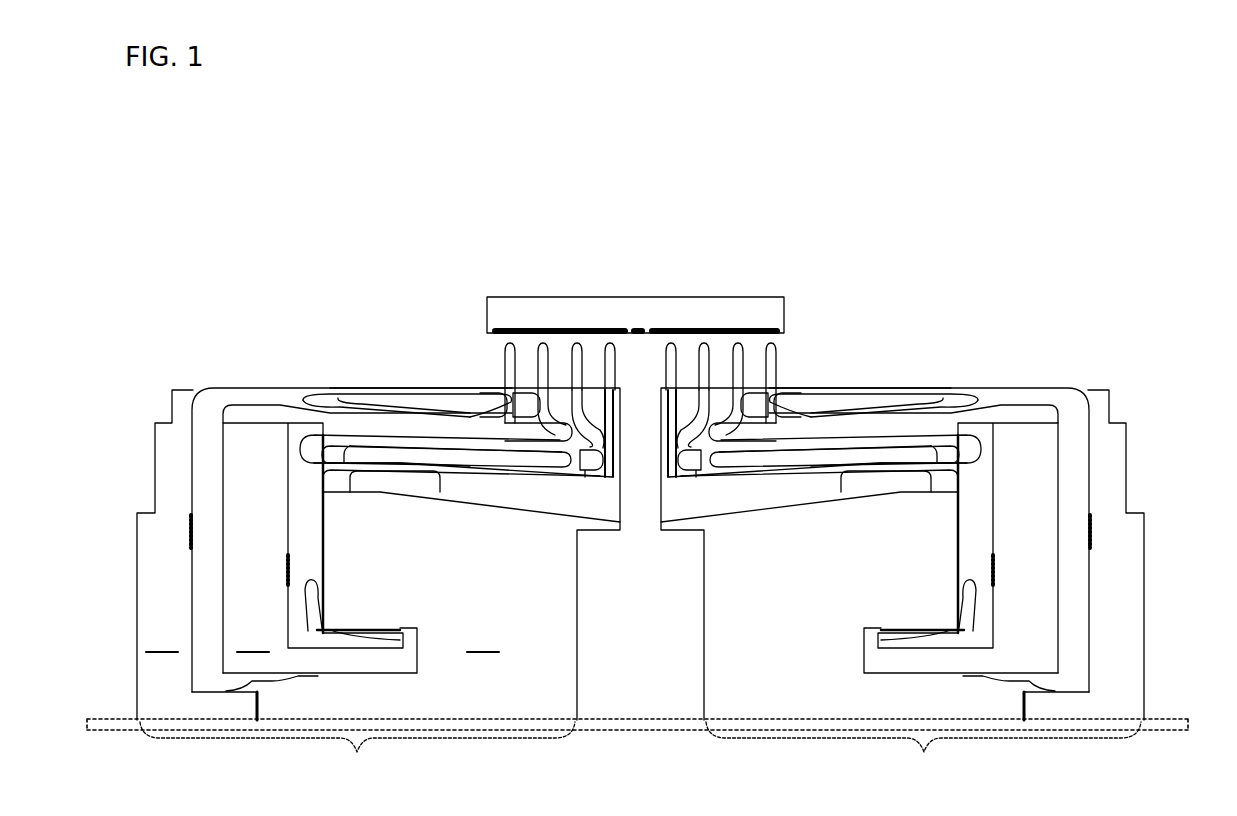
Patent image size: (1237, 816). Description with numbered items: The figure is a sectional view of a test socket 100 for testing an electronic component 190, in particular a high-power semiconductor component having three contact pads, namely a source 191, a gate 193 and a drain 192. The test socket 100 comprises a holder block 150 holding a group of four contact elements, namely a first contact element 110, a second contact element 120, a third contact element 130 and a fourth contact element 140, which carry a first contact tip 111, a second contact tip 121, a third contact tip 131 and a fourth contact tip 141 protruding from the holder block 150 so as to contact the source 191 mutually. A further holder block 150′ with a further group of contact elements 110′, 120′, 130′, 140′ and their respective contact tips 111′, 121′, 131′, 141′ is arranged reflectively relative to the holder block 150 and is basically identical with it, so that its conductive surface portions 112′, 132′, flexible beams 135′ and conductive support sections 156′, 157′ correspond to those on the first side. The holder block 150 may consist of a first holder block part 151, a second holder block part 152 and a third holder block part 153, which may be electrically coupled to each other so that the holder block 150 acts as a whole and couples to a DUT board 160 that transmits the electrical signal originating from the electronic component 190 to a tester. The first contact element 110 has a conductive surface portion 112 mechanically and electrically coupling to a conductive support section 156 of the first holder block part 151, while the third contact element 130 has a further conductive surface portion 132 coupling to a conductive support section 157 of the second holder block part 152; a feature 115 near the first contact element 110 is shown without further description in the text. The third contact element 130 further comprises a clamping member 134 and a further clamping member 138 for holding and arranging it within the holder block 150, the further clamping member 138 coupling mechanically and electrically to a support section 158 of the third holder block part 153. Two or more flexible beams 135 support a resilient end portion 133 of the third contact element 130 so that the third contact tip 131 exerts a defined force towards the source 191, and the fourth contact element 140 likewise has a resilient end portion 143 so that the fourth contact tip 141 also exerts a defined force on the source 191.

The test socket 100 is at (309, 235).
The first contact element 110 is at (205, 418).
The further first contact element 110′ is at (1076, 418).
The first contact tip 111 is at (508, 345).
The first terminal 111′ is at (773, 345).
The conductive surface portion 112 is at (198, 538).
The inner housing 112′ is at (1083, 538).
The housing top wall 115 is at (396, 389).
The second contact element 120 is at (345, 400).
The further second contact element 120′ is at (936, 400).
The second contact tip 121 is at (505, 358).
The contact tip 121′ is at (776, 358).
The third contact element 130 is at (373, 440).
The further third contact element 130′ is at (976, 492).
The third contact tip 131 is at (575, 343).
The contact tip 131′ is at (706, 343).
The further conductive surface portion 132 is at (325, 567).
The contact wall 132′ is at (956, 567).
The resilient end portion 133 is at (578, 455).
The clamping member 134 is at (322, 600).
The flexible beams 135 is at (432, 445).
The contact arm 135′ is at (849, 445).
The further clamping member 138 is at (345, 640).
The fourth contact element 140 is at (343, 487).
The further fourth contact element 140′ is at (938, 487).
The fourth contact tip 141 is at (607, 343).
The contact tip 141′ is at (674, 343).
The resilient end portion 143 is at (610, 460).
The holder block 150 is at (357, 751).
The further holder block 150′ is at (923, 751).
The first holder block part 151 is at (163, 639).
The second holder block part 152 is at (254, 639).
The third holder block part 153 is at (484, 639).
The conductive support section 156 is at (190, 530).
The fastener 156′ is at (1091, 530).
The conductive support section 157 is at (290, 575).
The fastener 157′ is at (991, 575).
The support section 158 is at (345, 628).
The DUT board 160 is at (612, 722).
The electronic component 190 is at (487, 312).
The source 191 is at (628, 328).
The drain 192 is at (660, 328).
The gate 193 is at (638, 328).